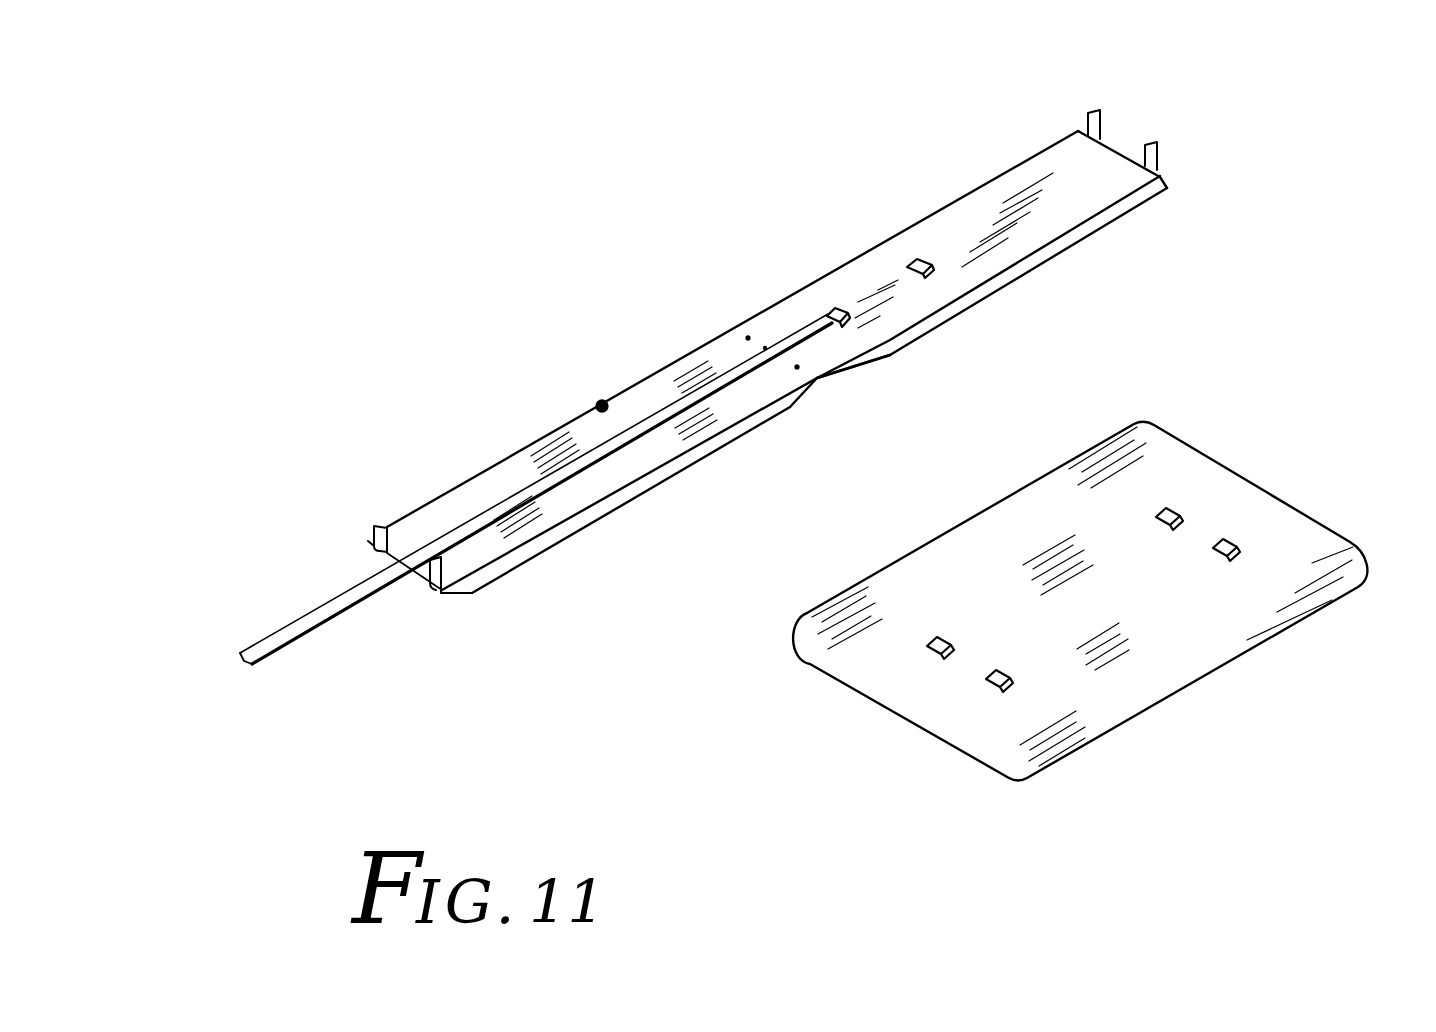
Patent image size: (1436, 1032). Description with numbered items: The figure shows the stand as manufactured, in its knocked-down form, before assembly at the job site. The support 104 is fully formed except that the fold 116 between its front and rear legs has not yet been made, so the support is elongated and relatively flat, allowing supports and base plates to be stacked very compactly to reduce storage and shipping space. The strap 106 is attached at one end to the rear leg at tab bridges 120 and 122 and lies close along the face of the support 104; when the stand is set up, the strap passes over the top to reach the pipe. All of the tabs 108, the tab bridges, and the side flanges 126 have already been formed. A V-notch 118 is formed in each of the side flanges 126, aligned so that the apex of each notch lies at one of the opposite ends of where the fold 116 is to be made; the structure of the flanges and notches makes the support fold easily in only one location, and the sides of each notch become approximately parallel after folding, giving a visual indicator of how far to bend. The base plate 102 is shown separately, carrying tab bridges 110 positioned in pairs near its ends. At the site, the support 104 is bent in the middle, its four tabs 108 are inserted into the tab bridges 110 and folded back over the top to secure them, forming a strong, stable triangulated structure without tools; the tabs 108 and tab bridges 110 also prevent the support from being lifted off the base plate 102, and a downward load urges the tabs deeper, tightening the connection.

The base plate 102 is at (1170, 699).
The support 104 is at (600, 403).
The strap 106 is at (283, 627).
The tabs 108 is at (375, 523).
The tab bridges 110 is at (1170, 506).
The fold 116 is at (736, 332).
The notches 118 is at (818, 379).
The tab bridge 120 is at (831, 311).
The tab bridge 122 is at (920, 259).
The side flanges 126 is at (1117, 221).